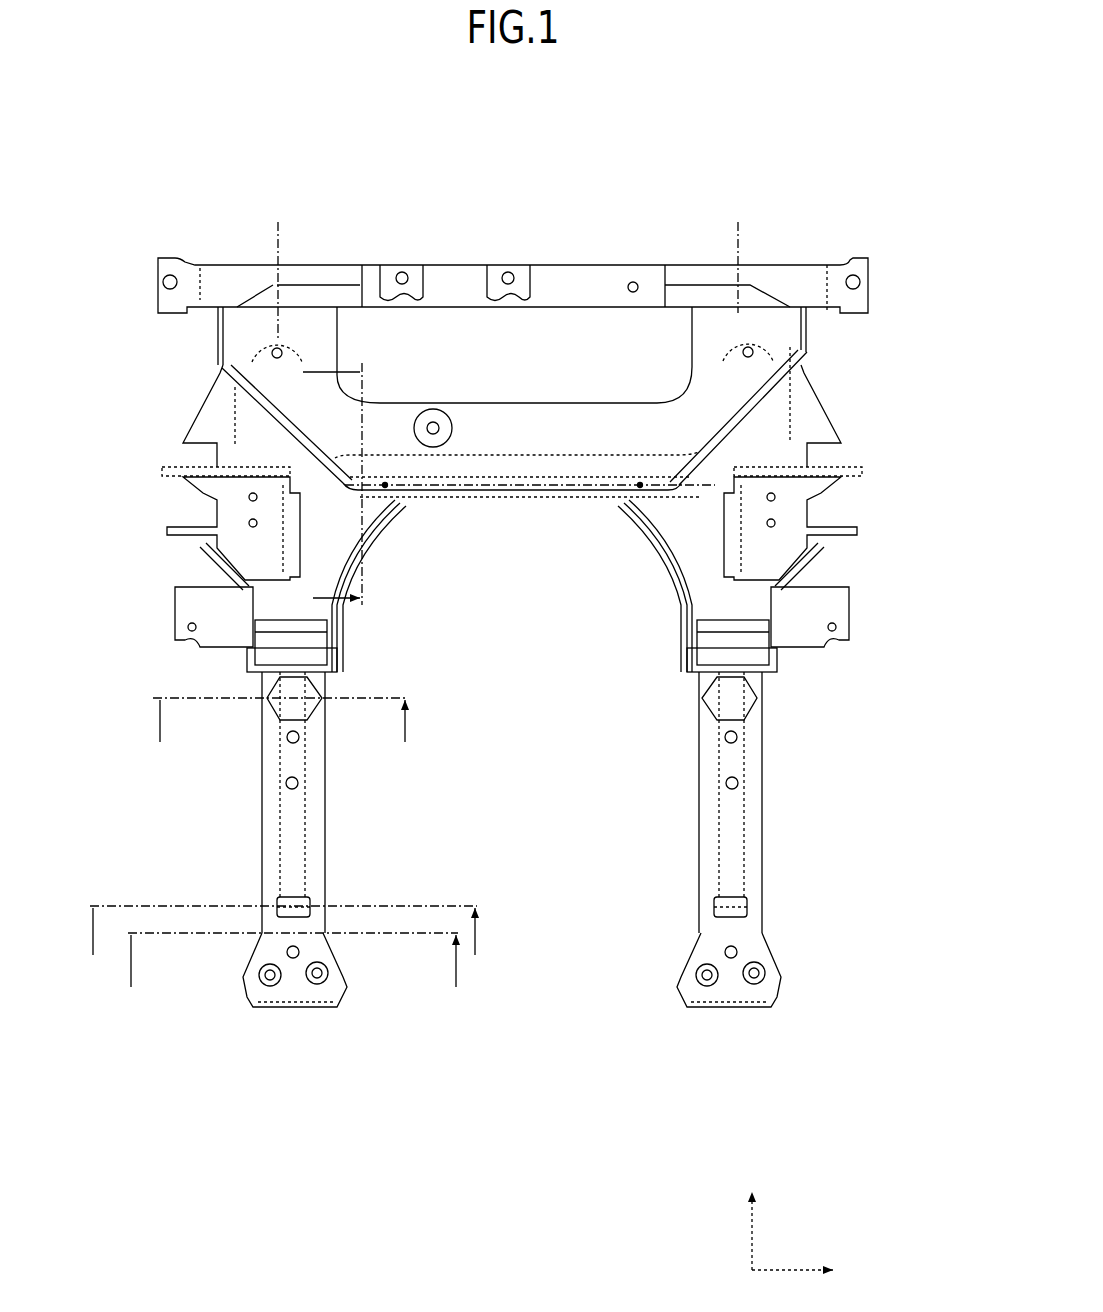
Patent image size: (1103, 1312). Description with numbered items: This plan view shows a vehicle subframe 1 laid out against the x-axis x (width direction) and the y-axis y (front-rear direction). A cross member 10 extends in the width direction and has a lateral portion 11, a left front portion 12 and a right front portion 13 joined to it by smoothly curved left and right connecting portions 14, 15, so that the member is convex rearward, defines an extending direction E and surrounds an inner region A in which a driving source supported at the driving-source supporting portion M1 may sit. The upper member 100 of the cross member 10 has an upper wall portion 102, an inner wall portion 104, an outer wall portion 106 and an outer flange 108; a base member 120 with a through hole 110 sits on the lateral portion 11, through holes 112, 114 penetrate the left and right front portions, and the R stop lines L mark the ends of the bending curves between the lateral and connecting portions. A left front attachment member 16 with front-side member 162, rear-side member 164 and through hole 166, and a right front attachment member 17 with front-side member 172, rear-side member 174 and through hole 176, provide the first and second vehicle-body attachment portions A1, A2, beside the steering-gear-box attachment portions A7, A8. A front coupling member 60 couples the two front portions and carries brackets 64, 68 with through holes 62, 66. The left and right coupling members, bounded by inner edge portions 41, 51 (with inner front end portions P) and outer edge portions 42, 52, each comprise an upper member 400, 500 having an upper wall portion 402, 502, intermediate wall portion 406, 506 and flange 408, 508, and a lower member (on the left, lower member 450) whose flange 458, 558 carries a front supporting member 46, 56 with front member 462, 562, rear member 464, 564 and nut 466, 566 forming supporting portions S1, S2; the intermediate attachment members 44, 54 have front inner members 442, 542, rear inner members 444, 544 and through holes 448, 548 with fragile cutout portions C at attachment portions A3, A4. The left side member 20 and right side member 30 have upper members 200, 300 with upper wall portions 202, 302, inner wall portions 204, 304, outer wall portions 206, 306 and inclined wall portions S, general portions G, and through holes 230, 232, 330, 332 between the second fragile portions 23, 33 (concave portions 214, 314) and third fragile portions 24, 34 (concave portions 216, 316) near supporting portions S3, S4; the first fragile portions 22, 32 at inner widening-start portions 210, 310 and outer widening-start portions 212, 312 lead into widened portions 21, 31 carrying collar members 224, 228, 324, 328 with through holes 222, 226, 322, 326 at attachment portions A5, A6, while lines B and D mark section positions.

The subframe 1 is at (745, 125).
The cross member 10 is at (565, 395).
The upper member 100 is at (616, 316).
The upper wall portion 102 is at (508, 402).
The inner wall portion 104 is at (620, 402).
The outer wall portion 106 is at (570, 493).
The outer flange 108 is at (447, 490).
The lateral portion 11 is at (525, 395).
The through hole 110 is at (435, 425).
The through hole 112 is at (279, 348).
The through hole 114 is at (752, 348).
The left front portion 12 is at (348, 360).
The base member 120 is at (433, 408).
The right front portion 13 is at (690, 330).
The left connecting portion 14 is at (390, 397).
The right connecting portion 15 is at (665, 390).
The left front attachment member 16 is at (185, 258).
The front-side member 162 is at (215, 280).
The rear-side member 164 is at (325, 297).
The through hole 166 is at (168, 282).
The right front attachment member 17 is at (866, 258).
The front-side member 172 is at (793, 282).
The rear-side member 174 is at (712, 292).
The through hole 176 is at (857, 282).
The left side member 20 is at (190, 783).
The upper member 200 is at (340, 788).
The upper wall portion 202 is at (300, 826).
The inner wall portion 204 is at (327, 875).
The outer wall portion 206 is at (262, 880).
The widened portion 21 is at (270, 1010).
The inner widening-start portion 210 is at (330, 937).
The outer widening-start portion 212 is at (262, 927).
The concave portion 214 is at (267, 900).
The concave portion 216 is at (262, 700).
The first fragile portion 22 is at (345, 923).
The through hole 222 is at (329, 973).
The collar member 224 is at (340, 990).
The through hole 226 is at (258, 977).
The collar member 228 is at (258, 972).
The second fragile portion 23 is at (320, 897).
The through hole 230 is at (286, 784).
The through hole 232 is at (299, 737).
The third fragile portion 24 is at (333, 697).
The right side member 30 is at (838, 783).
The upper member 300 is at (685, 778).
The upper wall portion 302 is at (722, 826).
The inner wall portion 304 is at (703, 880).
The outer wall portion 306 is at (765, 880).
The widened portion 31 is at (722, 1010).
The inner widening-start portion 310 is at (697, 937).
The outer widening-start portion 312 is at (766, 927).
The concave portion 314 is at (757, 897).
The concave portion 316 is at (757, 700).
The first fragile portion 32 is at (685, 923).
The through hole 322 is at (696, 977).
The collar member 324 is at (688, 990).
The through hole 326 is at (766, 973).
The collar member 328 is at (770, 972).
The second fragile portion 33 is at (705, 900).
The through hole 330 is at (738, 784).
The through hole 332 is at (725, 737).
The third fragile portion 34 is at (700, 697).
The upper member 400 is at (222, 408).
The upper wall portion 402 is at (390, 497).
The intermediate wall portion 406 is at (375, 530).
The flange 408 is at (353, 570).
The inner edge portion 41 is at (370, 557).
The outer edge portion 42 is at (185, 427).
The left intermediate attachment member 44 is at (170, 647).
The front inner member 442 is at (279, 642).
The rear inner member 444 is at (262, 665).
The through hole 448 is at (218, 620).
The lower member 450 is at (178, 443).
The flange 458 is at (353, 610).
The left front supporting member 46 is at (170, 487).
The front member 462 is at (167, 517).
The rear member 464 is at (185, 535).
The nut 466 is at (200, 548).
The upper member 500 is at (800, 415).
The upper wall portion 502 is at (634, 497).
The intermediate wall portion 506 is at (650, 530).
The flange 508 is at (672, 570).
The inner edge portion 51 is at (655, 557).
The outer edge portion 52 is at (835, 428).
The right intermediate attachment member 54 is at (860, 648).
The front inner member 542 is at (746, 642).
The rear inner member 544 is at (765, 660).
The through hole 548 is at (820, 615).
The flange 558 is at (671, 610).
The right front supporting member 56 is at (832, 495).
The front member 562 is at (837, 482).
The rear member 564 is at (840, 533).
The nut 566 is at (835, 553).
The front coupling member 60 is at (633, 262).
The through hole 62 is at (403, 278).
The bracket 64 is at (393, 262).
The through hole 66 is at (509, 278).
The bracket 68 is at (503, 262).
The inner region A is at (500, 347).
The first vehicle-body attachment portion A1 is at (147, 298).
The second vehicle-body attachment portion A2 is at (878, 298).
The third vehicle-body attachment portion A3 is at (170, 600).
The fourth vehicle-body attachment portion A4 is at (855, 600).
The fifth vehicle-body attachment portion A5 is at (305, 1010).
The sixth vehicle-body attachment portion A6 is at (758, 1010).
The steering-gear-box left attachment portion A7 is at (257, 355).
The steering-gear-box right attachment portion A8 is at (772, 357).
The section line B is at (294, 974).
The cutout portion C is at (182, 625).
The section line D is at (283, 734).
The extending direction E is at (280, 225).
The general portion G is at (258, 851).
The R stop portion L is at (640, 483).
The driving-source supporting portion M1 is at (455, 225).
The inner front end portion P is at (548, 515).
The inclined wall portion S is at (268, 840).
The first supporting portion S1 is at (177, 514).
The second supporting portion S2 is at (840, 512).
The third supporting portion S3 is at (255, 757).
The fourth supporting portion S4 is at (775, 758).
The x-axis x is at (803, 1273).
The y-axis y is at (751, 1216).